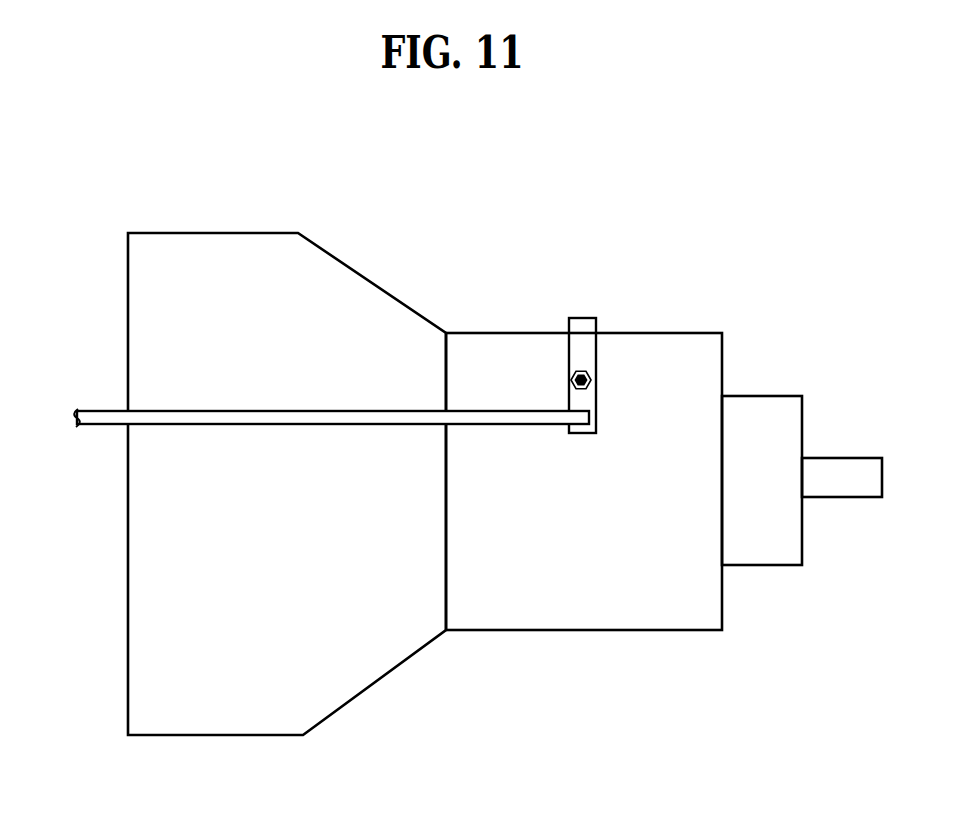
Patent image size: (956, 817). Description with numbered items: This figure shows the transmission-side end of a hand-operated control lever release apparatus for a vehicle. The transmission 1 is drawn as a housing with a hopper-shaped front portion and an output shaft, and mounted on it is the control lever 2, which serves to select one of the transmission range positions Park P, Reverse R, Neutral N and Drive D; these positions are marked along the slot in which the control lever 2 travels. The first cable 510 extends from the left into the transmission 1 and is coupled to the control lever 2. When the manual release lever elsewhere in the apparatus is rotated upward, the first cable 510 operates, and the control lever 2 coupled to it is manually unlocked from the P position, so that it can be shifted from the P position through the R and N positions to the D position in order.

The transmission 1 is at (257, 212).
The control lever 2 is at (604, 371).
The first cable 510 is at (90, 450).
The Park position P is at (568, 358).
The Reverse position R is at (567, 323).
The Neutral position N is at (596, 340).
The Drive position D is at (603, 333).